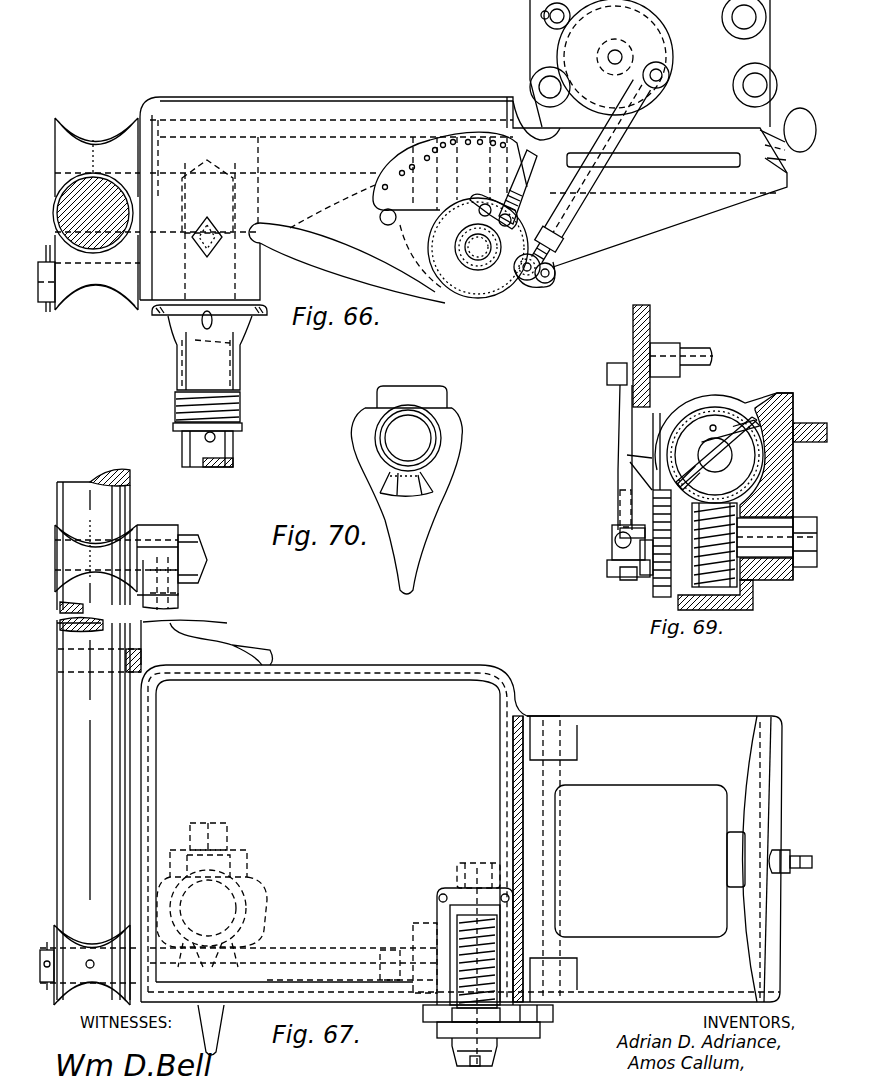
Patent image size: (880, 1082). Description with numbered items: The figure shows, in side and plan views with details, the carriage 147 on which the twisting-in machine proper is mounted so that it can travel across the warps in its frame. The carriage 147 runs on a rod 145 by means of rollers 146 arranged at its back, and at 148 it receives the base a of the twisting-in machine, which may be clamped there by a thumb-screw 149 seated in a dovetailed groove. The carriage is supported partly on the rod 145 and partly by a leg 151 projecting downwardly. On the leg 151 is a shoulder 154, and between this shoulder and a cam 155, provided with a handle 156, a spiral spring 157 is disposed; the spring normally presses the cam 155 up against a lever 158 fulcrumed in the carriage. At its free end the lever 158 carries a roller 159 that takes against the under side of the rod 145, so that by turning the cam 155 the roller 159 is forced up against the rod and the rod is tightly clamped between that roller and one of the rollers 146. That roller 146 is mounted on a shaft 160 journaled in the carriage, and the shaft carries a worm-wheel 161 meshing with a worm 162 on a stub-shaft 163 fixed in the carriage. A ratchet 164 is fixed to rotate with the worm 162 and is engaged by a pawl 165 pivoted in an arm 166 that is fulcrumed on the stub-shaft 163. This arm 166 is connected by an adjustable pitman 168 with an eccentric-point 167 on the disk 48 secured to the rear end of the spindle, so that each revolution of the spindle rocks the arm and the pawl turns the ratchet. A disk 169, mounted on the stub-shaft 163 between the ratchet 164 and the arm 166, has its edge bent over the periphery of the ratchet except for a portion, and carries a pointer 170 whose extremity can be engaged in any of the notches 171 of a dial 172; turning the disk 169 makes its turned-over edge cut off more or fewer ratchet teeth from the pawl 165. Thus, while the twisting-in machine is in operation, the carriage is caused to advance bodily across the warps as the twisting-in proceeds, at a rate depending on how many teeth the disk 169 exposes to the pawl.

In FIG. 66, the disk 48 is at (665, 40).
In FIG. 69, the disk 48 is at (646, 328).
In FIG. 66, the rod 145 is at (93, 213).
In FIG. 67, the rod 145 is at (60, 870).
In FIG. 66, the rollers 146 is at (103, 128).
In FIG. 67, the rollers 146 is at (132, 527).
In FIG. 66, the carriage 147 is at (272, 103).
In FIG. 69, the carriage 147 is at (798, 419).
In FIG. 67, the carriage 147 is at (309, 665).
In FIG. 67, the base-receiving portion of the carriage 148 is at (650, 723).
In FIG. 66, the thumb-screw 149 is at (799, 108).
In FIG. 67, the thumb-screw 149 is at (800, 843).
In FIG. 66, the leg 151 is at (236, 449).
In FIG. 66, the shoulder 154 is at (245, 428).
In FIG. 66, the cam 155 is at (248, 326).
In FIG. 70, the cam 155 is at (453, 465).
In FIG. 66, the handle 156 is at (208, 333).
In FIG. 70, the handle 156 is at (412, 552).
In FIG. 67, the handle 156 is at (216, 1038).
In FIG. 66, the spiral spring 157 is at (243, 401).
In FIG. 66, the lever 158 is at (352, 266).
In FIG. 66, the roller 159 is at (76, 289).
In FIG. 69, the shaft 160 is at (716, 472).
In FIG. 67, the shaft 160 is at (347, 950).
In FIG. 69, the worm-wheel 161 is at (750, 425).
In FIG. 67, the worm-wheel 161 is at (455, 1020).
In FIG. 69, the worm 162 is at (735, 530).
In FIG. 66, the stub-shaft 163 is at (473, 250).
In FIG. 69, the stub-shaft 163 is at (778, 567).
In FIG. 66, the ratchet 164 is at (514, 224).
In FIG. 69, the ratchet 164 is at (660, 592).
In FIG. 67, the ratchet 164 is at (452, 1010).
In FIG. 66, the pawl 165 is at (556, 246).
In FIG. 69, the pawl 165 is at (645, 565).
In FIG. 67, the pawl 165 is at (553, 1018).
In FIG. 66, the arm 166 is at (508, 282).
In FIG. 69, the arm 166 is at (620, 548).
In FIG. 67, the arm 166 is at (527, 1040).
In FIG. 66, the eccentric-point 167 is at (670, 76).
In FIG. 66, the adjustable pitman 168 is at (631, 122).
In FIG. 69, the adjustable pitman 168 is at (619, 447).
In FIG. 66, the disk 169 is at (473, 292).
In FIG. 69, the disk 169 is at (620, 533).
In FIG. 66, the pointer 170 is at (533, 185).
In FIG. 69, the pointer 170 is at (645, 445).
In FIG. 66, the notches 171 is at (428, 170).
In FIG. 66, the dial 172 is at (372, 183).
In FIG. 66, the base a is at (783, 164).